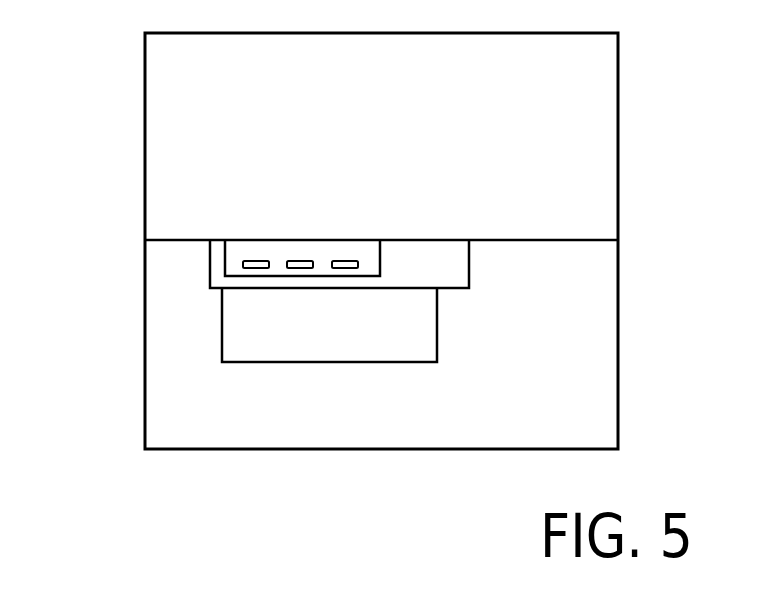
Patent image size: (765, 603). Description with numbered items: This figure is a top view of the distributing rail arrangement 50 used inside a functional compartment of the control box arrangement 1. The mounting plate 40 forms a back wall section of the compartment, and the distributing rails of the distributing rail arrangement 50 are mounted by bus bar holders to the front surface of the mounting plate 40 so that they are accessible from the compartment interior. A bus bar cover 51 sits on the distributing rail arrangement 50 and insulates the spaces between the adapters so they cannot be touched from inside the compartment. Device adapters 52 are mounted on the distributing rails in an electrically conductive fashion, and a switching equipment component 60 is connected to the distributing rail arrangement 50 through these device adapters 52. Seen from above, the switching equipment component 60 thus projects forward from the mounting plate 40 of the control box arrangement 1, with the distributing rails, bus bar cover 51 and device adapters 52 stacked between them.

The control box arrangement 1 is at (365, 511).
The mounting plate 40 is at (563, 234).
The distributing rail arrangement 50 is at (263, 252).
The bus bar cover 51 is at (373, 273).
The device adapter 52 is at (217, 269).
The switching equipment component 60 is at (349, 339).